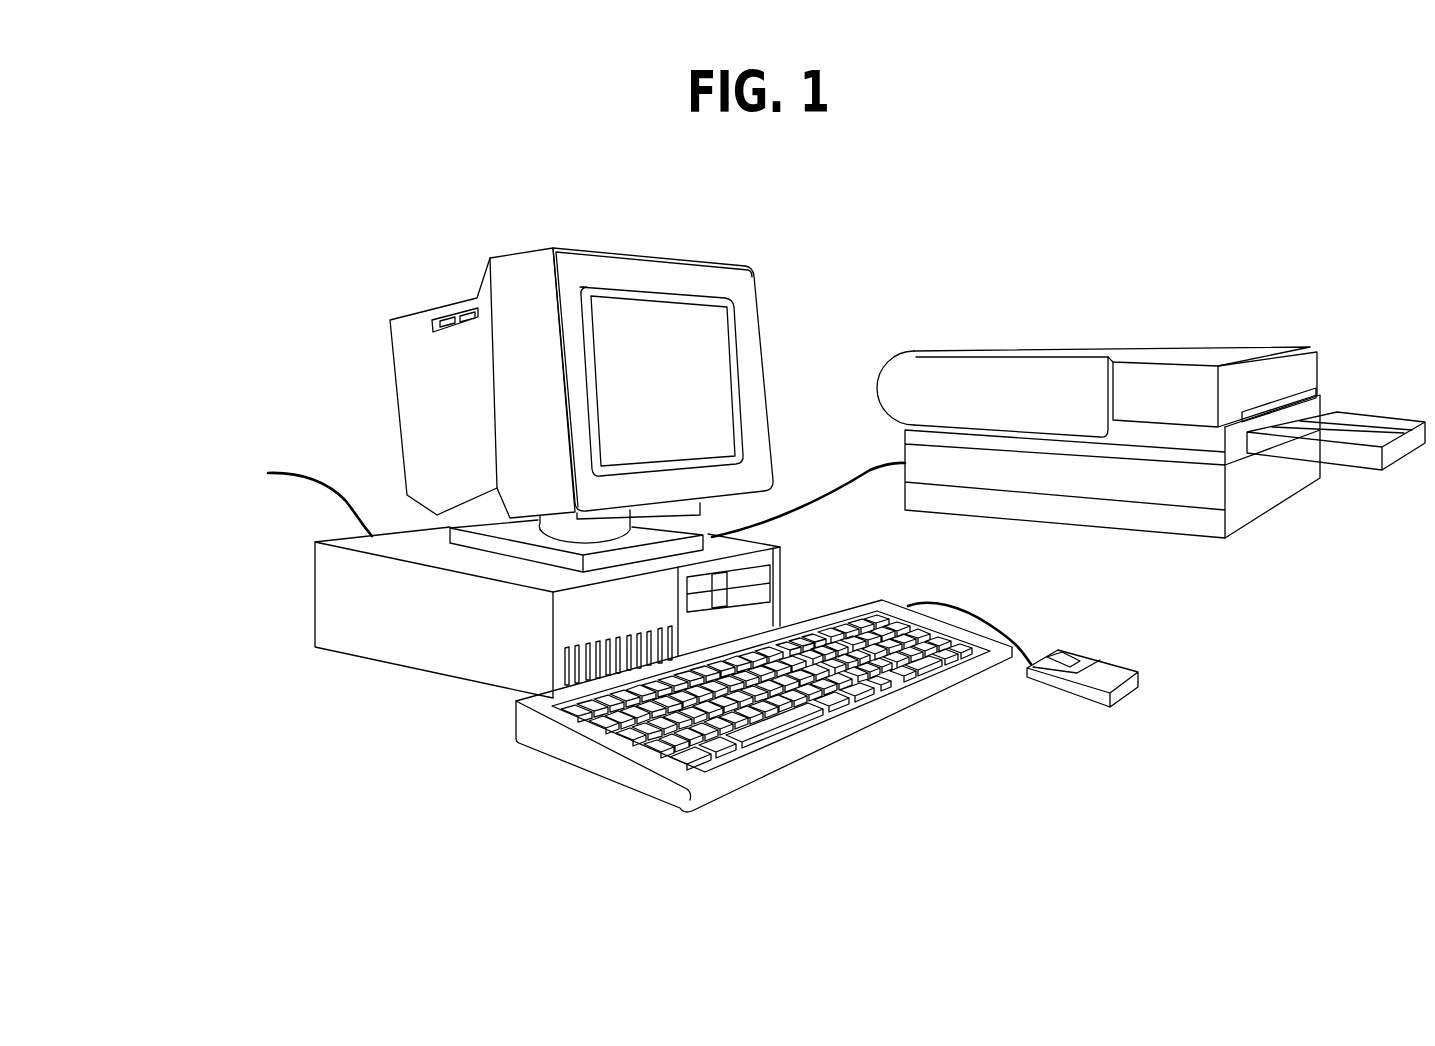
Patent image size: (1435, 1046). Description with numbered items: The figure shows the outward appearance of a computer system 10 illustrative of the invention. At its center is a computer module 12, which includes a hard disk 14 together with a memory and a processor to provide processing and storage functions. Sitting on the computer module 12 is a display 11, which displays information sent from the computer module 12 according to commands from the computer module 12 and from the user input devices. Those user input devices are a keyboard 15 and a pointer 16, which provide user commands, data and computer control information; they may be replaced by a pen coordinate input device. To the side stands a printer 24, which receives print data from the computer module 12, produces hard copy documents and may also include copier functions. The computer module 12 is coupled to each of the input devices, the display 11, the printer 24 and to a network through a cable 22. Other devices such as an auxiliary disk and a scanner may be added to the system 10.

The computer system 10 is at (882, 218).
The display 11 is at (618, 272).
The computer module 12 is at (432, 663).
The hard disk 14 is at (748, 596).
The keyboard 15 is at (578, 767).
The pointer 16 is at (1128, 697).
The cable 22 is at (325, 492).
The printer 24 is at (1070, 348).